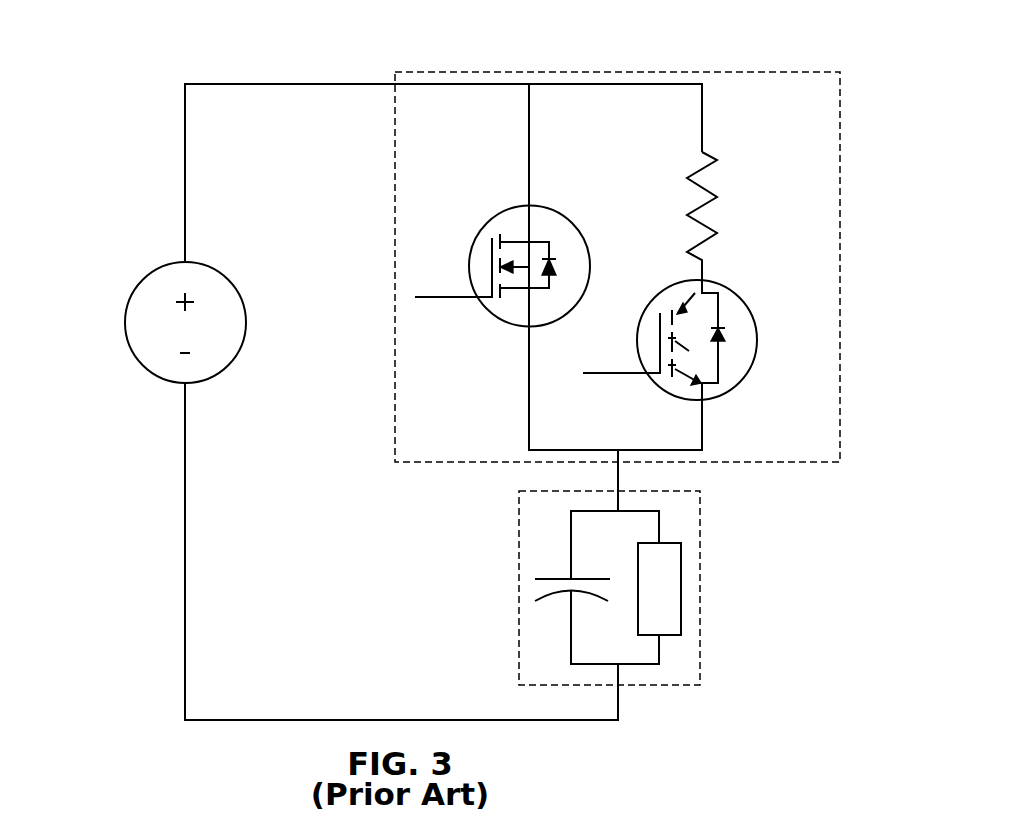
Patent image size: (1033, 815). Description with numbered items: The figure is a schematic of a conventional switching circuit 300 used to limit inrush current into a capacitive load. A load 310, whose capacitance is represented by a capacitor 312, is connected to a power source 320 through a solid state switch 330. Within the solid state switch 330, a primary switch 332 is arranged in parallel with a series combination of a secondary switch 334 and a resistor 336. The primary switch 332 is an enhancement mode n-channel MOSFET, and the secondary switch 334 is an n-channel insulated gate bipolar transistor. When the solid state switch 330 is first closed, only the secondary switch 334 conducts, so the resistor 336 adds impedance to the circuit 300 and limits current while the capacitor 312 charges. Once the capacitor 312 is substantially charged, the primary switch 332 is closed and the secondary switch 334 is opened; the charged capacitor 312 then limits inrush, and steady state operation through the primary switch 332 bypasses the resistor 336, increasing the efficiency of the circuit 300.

The circuit 300 is at (840, 53).
The load 310 is at (623, 588).
The capacitor 312 is at (556, 577).
The power source 320 is at (133, 298).
The solid state switch 330 is at (840, 185).
The primary switch 332 is at (580, 218).
The secondary switch 334 is at (735, 388).
The resistor 336 is at (706, 190).